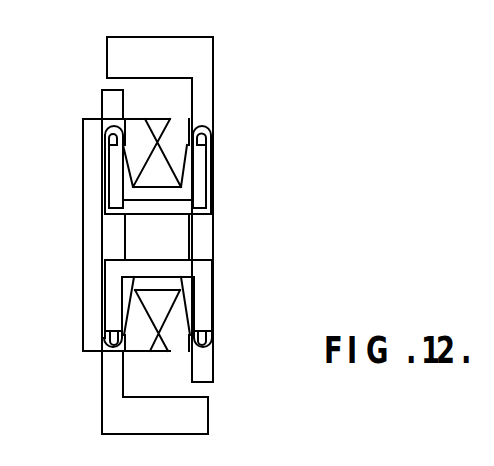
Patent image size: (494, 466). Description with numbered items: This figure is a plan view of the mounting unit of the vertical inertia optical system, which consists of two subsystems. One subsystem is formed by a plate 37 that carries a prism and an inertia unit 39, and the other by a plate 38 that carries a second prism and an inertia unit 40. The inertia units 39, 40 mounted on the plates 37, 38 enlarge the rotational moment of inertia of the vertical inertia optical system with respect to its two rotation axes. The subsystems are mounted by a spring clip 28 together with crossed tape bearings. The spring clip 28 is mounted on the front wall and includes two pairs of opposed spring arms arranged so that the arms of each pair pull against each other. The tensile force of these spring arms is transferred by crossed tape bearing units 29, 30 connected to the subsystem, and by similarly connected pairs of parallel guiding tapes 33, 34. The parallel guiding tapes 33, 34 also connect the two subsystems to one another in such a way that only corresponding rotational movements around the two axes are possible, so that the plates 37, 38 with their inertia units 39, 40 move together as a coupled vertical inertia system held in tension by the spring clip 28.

The spring clip 28 is at (83, 311).
The crossed tape bearing unit 29 is at (165, 311).
The crossed tape bearing unit 30 is at (146, 160).
The parallel guiding tape 33 is at (102, 235).
The parallel guiding tape 34 is at (211, 167).
The plate 37 is at (197, 270).
The plate 38 is at (197, 207).
The inertia unit 39 is at (201, 106).
The inertia unit 40 is at (185, 423).